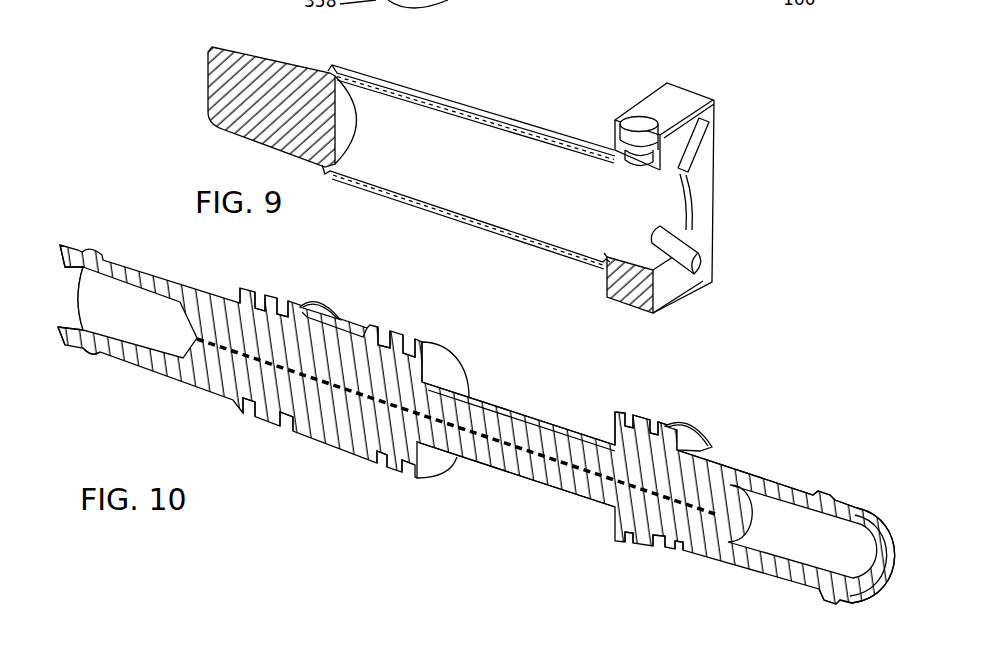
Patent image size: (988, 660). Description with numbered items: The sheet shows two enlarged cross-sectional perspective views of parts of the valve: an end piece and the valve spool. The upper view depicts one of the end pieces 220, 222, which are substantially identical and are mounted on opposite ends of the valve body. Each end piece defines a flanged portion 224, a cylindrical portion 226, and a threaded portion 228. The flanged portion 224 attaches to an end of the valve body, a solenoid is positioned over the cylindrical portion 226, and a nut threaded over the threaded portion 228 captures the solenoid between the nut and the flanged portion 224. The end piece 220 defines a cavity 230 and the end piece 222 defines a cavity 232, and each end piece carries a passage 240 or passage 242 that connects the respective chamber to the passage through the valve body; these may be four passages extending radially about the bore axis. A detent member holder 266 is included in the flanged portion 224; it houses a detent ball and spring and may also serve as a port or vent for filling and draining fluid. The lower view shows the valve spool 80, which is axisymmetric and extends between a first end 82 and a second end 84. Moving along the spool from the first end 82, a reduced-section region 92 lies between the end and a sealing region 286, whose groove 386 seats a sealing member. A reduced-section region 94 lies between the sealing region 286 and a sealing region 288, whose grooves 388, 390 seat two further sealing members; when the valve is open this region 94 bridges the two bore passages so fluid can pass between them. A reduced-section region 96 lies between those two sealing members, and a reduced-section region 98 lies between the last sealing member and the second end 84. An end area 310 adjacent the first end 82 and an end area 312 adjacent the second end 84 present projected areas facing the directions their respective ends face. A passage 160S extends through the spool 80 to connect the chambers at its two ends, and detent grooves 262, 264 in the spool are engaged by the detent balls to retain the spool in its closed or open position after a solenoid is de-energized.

In FIG. 9, the end piece 220 is at (157, 32).
In FIG. 9, the end piece 222 is at (468, 163).
In FIG. 9, the flanged portion 224 is at (683, 100).
In FIG. 9, the cylindrical portion 226 is at (493, 113).
In FIG. 9, the threaded portion 228 is at (242, 50).
In FIG. 9, the cavity 230 is at (643, 208).
In FIG. 9, the cavity 232 is at (693, 145).
In FIG. 9, the passage 240 is at (703, 282).
In FIG. 9, the passage 242 is at (675, 250).
In FIG. 9, the detent member holder 266 is at (634, 117).
In FIG. 10, the valve spool 80 is at (96, 421).
In FIG. 10, the first end 82 is at (860, 593).
In FIG. 10, the second end 84 is at (60, 246).
In FIG. 10, the reduced-section region 92 is at (743, 462).
In FIG. 10, the reduced-section region 94 is at (554, 424).
In FIG. 10, the reduced-section region 96 is at (328, 444).
In FIG. 10, the reduced-section region 98 is at (146, 266).
In FIG. 10, the passage 160S is at (555, 455).
In FIG. 10, the detent groove 262 is at (818, 590).
In FIG. 10, the detent groove 264 is at (92, 355).
In FIG. 10, the sealing region 286 is at (660, 416).
In FIG. 10, the sealing region 288 is at (353, 325).
In FIG. 10, the end area 310 is at (708, 442).
In FIG. 10, the end area 312 is at (234, 404).
In FIG. 10, the groove 386 is at (650, 550).
In FIG. 10, the groove 388 is at (378, 464).
In FIG. 10, the groove 390 is at (287, 300).